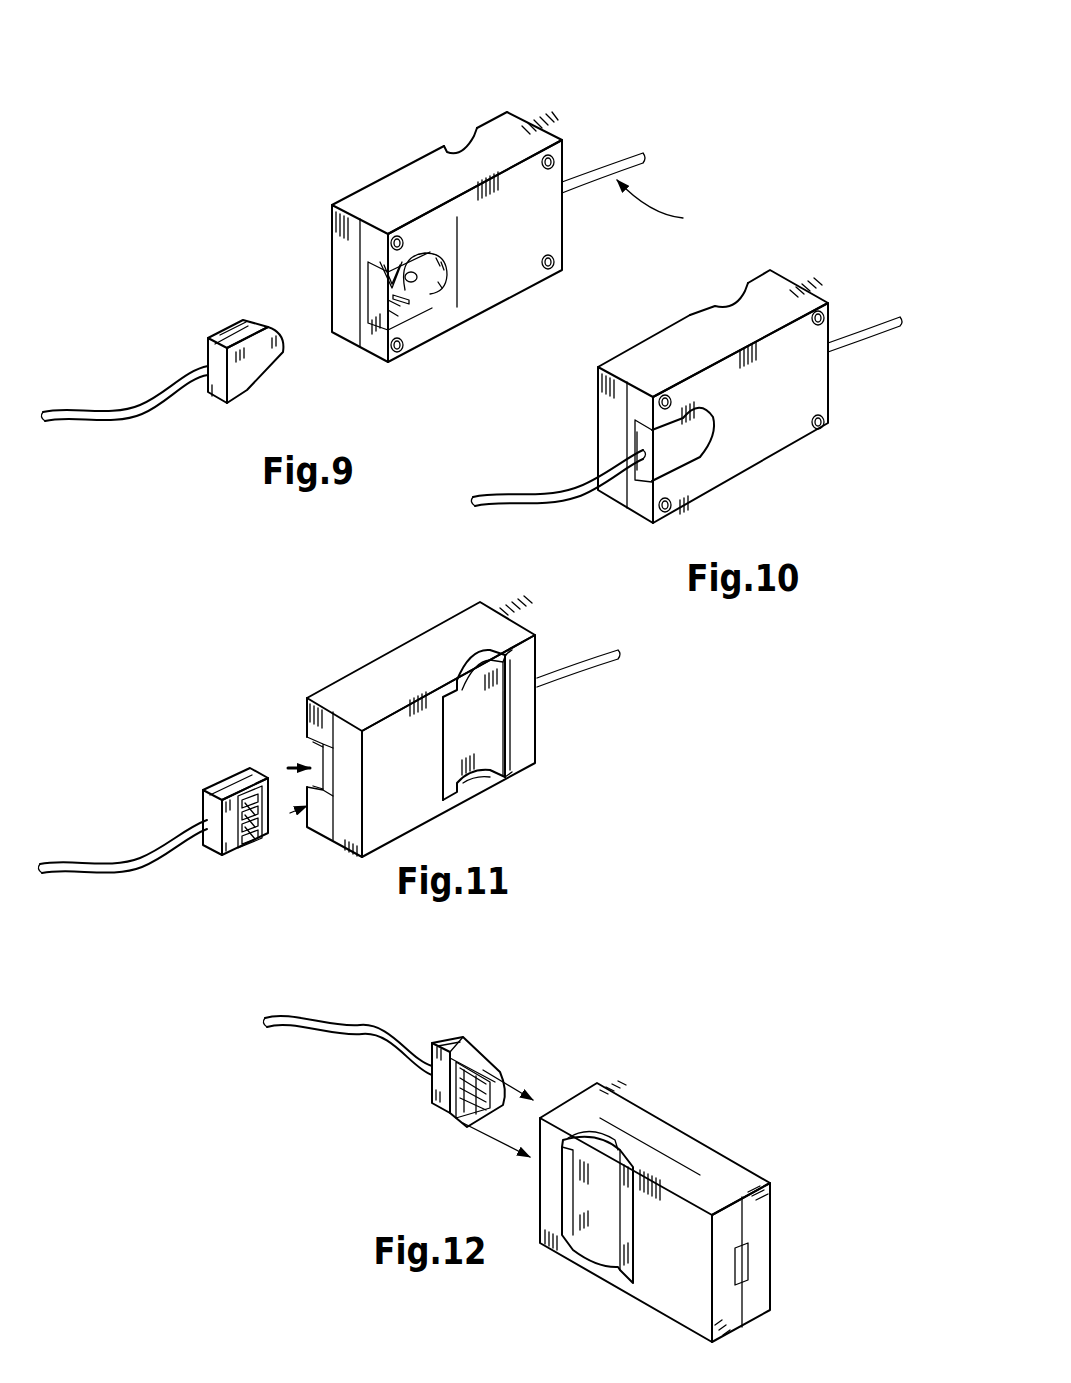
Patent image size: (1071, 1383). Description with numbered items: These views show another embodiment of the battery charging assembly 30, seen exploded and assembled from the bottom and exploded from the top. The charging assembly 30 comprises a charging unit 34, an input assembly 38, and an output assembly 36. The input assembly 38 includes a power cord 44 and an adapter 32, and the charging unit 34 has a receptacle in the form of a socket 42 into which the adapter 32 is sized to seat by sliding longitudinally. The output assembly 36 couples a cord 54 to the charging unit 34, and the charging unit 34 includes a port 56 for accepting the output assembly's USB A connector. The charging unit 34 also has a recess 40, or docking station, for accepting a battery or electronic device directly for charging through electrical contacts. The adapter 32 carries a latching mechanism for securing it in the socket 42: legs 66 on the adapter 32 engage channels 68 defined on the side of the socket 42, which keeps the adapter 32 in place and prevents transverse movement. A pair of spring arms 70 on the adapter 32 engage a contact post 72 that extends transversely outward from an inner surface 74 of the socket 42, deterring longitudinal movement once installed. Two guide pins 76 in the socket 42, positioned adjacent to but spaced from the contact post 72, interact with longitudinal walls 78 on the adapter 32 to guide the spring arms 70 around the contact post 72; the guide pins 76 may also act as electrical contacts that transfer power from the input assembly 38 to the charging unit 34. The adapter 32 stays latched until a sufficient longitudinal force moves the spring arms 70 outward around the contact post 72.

In FIG. 9, the battery charging assembly 30 is at (455, 70).
In FIG. 10, the battery charging assembly 30 is at (798, 233).
In FIG. 11, the battery charging assembly 30 is at (570, 755).
In FIG. 12, the battery charging assembly 30 is at (645, 1012).
In FIG. 9, the adapter 32 is at (262, 355).
In FIG. 10, the adapter 32 is at (687, 450).
In FIG. 11, the adapter 32 is at (205, 808).
In FIG. 12, the adapter 32 is at (470, 1045).
In FIG. 9, the charging unit 34 is at (513, 268).
In FIG. 10, the charging unit 34 is at (613, 408).
In FIG. 11, the charging unit 34 is at (390, 668).
In FIG. 9, the output assembly 36 is at (666, 207).
In FIG. 9, the input assembly 38 is at (160, 432).
In FIG. 11, the input assembly 38 is at (153, 873).
In FIG. 9, the recess 40 is at (452, 143).
In FIG. 11, the recess 40 is at (468, 737).
In FIG. 12, the recess 40 is at (602, 1220).
In FIG. 9, the socket 42 is at (383, 290).
In FIG. 11, the socket 42 is at (310, 752).
In FIG. 9, the power cord 44 is at (103, 395).
In FIG. 10, the power cord 44 is at (527, 493).
In FIG. 11, the power cord 44 is at (72, 870).
In FIG. 12, the power cord 44 is at (318, 1040).
In FIG. 9, the cord 54 is at (593, 163).
In FIG. 12, the port 56 is at (742, 1258).
In FIG. 9, the legs 66 is at (222, 330).
In FIG. 11, the legs 66 is at (225, 790).
In FIG. 12, the legs 66 is at (635, 1118).
In FIG. 9, the channels 68 is at (392, 283).
In FIG. 11, the channels 68 is at (325, 743).
In FIG. 11, the spring arms 70 is at (262, 820).
In FIG. 12, the spring arms 70 is at (460, 1100).
In FIG. 9, the contact post 72 is at (412, 278).
In FIG. 9, the inner surface 74 is at (387, 283).
In FIG. 9, the guide pins 76 is at (410, 270).
In FIG. 11, the longitudinal walls 78 is at (255, 785).
In FIG. 12, the longitudinal walls 78 is at (490, 1082).